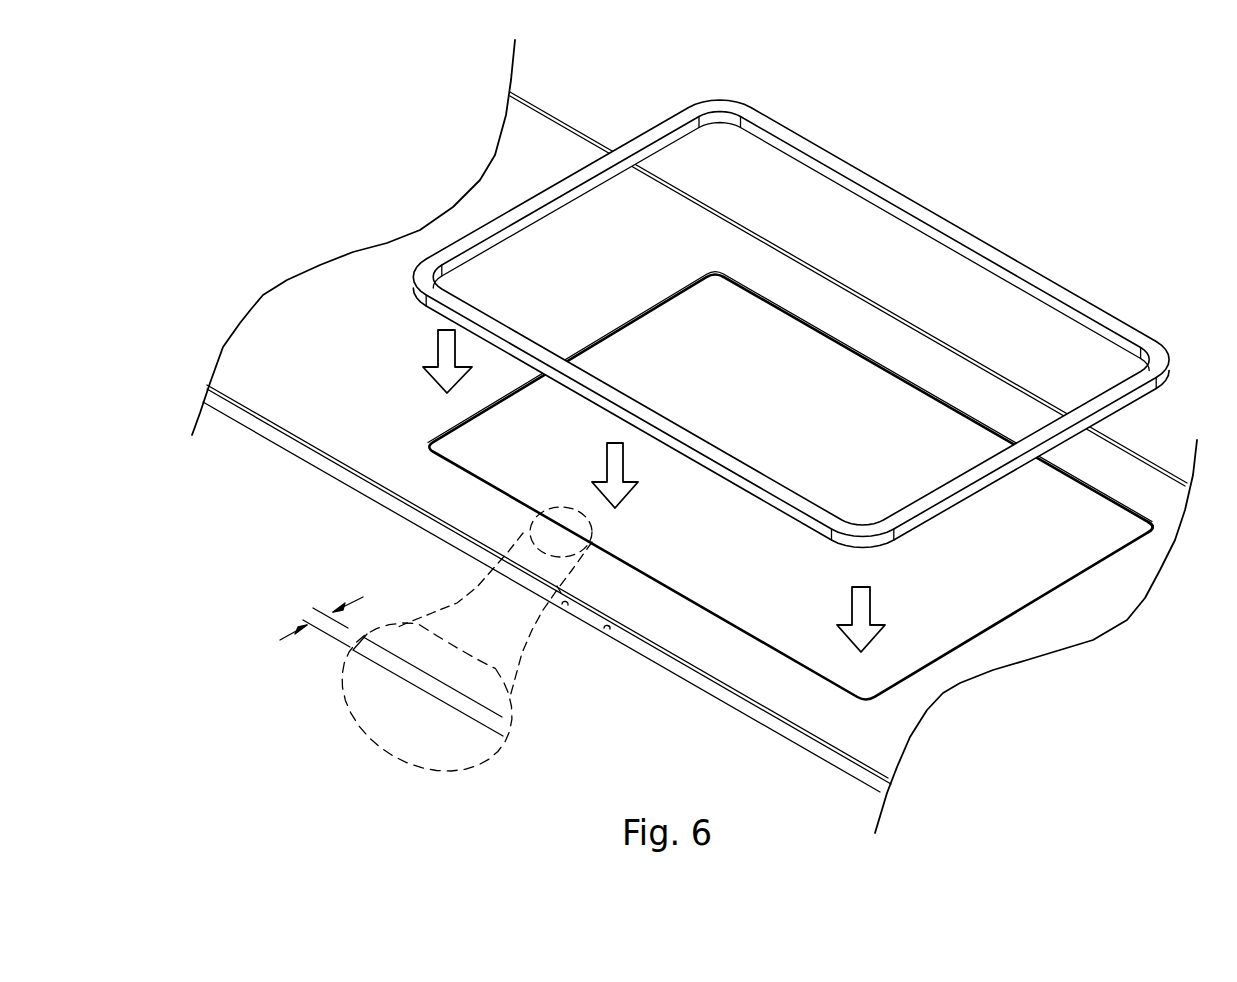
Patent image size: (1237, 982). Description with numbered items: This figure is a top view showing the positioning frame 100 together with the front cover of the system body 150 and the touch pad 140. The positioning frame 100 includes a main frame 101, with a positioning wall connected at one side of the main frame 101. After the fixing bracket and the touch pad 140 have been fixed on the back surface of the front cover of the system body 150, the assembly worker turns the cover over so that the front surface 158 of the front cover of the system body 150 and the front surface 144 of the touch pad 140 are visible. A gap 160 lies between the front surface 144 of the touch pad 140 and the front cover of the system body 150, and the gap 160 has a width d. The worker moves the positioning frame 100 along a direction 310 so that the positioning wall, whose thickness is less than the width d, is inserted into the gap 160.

The positioning frame 100 is at (893, 147).
The main frame 101 is at (957, 232).
The touch pad 140 is at (1017, 577).
The front surface of the touch pad 144 is at (1073, 547).
The front cover of the system body 150 is at (257, 342).
The front surface of the front cover of the system body 158 is at (349, 287).
The gap 160 is at (482, 713).
The direction 310 is at (877, 605).